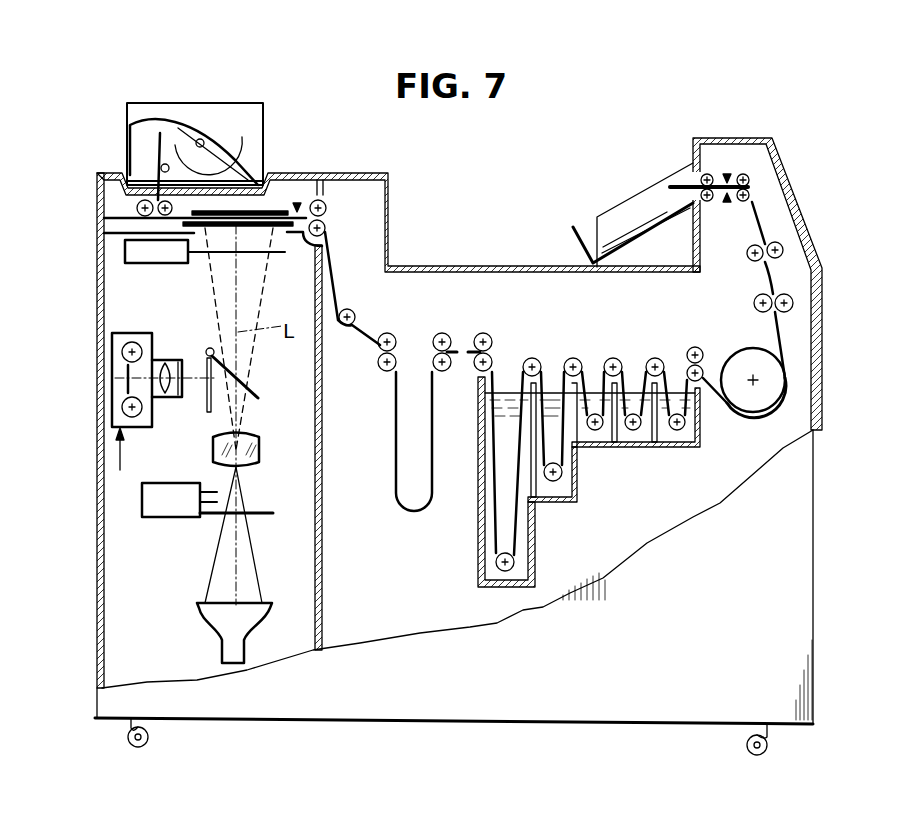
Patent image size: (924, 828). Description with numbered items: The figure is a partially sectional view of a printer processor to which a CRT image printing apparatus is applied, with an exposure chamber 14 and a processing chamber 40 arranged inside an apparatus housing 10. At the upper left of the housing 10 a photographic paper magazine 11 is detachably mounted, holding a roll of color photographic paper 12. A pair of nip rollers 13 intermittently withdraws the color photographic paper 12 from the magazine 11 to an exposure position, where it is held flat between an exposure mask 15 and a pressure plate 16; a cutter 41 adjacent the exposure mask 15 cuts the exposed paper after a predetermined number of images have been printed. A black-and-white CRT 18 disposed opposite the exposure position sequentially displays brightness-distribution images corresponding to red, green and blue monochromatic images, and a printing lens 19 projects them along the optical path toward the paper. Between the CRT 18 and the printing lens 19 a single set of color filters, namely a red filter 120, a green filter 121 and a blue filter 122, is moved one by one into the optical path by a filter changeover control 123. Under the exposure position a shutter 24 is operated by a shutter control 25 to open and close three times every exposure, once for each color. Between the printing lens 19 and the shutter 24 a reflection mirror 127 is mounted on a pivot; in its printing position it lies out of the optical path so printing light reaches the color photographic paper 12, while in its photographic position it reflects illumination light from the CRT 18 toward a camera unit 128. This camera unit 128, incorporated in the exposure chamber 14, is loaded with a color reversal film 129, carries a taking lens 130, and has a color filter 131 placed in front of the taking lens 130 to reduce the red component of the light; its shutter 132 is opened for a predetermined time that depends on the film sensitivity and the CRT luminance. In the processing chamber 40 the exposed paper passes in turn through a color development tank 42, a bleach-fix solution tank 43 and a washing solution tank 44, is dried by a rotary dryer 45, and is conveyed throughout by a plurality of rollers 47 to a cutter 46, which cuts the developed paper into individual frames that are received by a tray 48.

The apparatus housing 10 is at (818, 573).
The photographic paper magazine 11 is at (221, 112).
The color photographic paper 12 is at (162, 153).
The nip rollers 13 is at (137, 207).
The exposure chamber 14 is at (118, 586).
The exposure mask 15 is at (290, 222).
The pressure plate 16 is at (268, 208).
The black-and-white CRT 18 is at (218, 625).
The printing lens 19 is at (255, 448).
The shutter 24 is at (280, 258).
The shutter control 25 is at (130, 252).
The processing chamber 40 is at (504, 287).
The cutter 41 is at (304, 200).
The color development tank 42 is at (520, 561).
The bleach-fix solution tank 43 is at (563, 485).
The washing solution tank 44 is at (693, 452).
The rotary dryer 45 is at (753, 403).
The cutter 46 is at (728, 170).
The rollers 47 is at (387, 333).
The tray 48 is at (657, 190).
The red filter 120 is at (267, 517).
The green filter 121 is at (210, 515).
The blue filter 122 is at (207, 490).
The filter changeover control 123 is at (158, 510).
The reflection mirror 127 is at (257, 390).
The camera unit 128 is at (122, 463).
The color reversal film 129 is at (113, 368).
The taking lens 130 is at (170, 362).
The color filter 131 is at (183, 387).
The shutter 132 is at (128, 390).